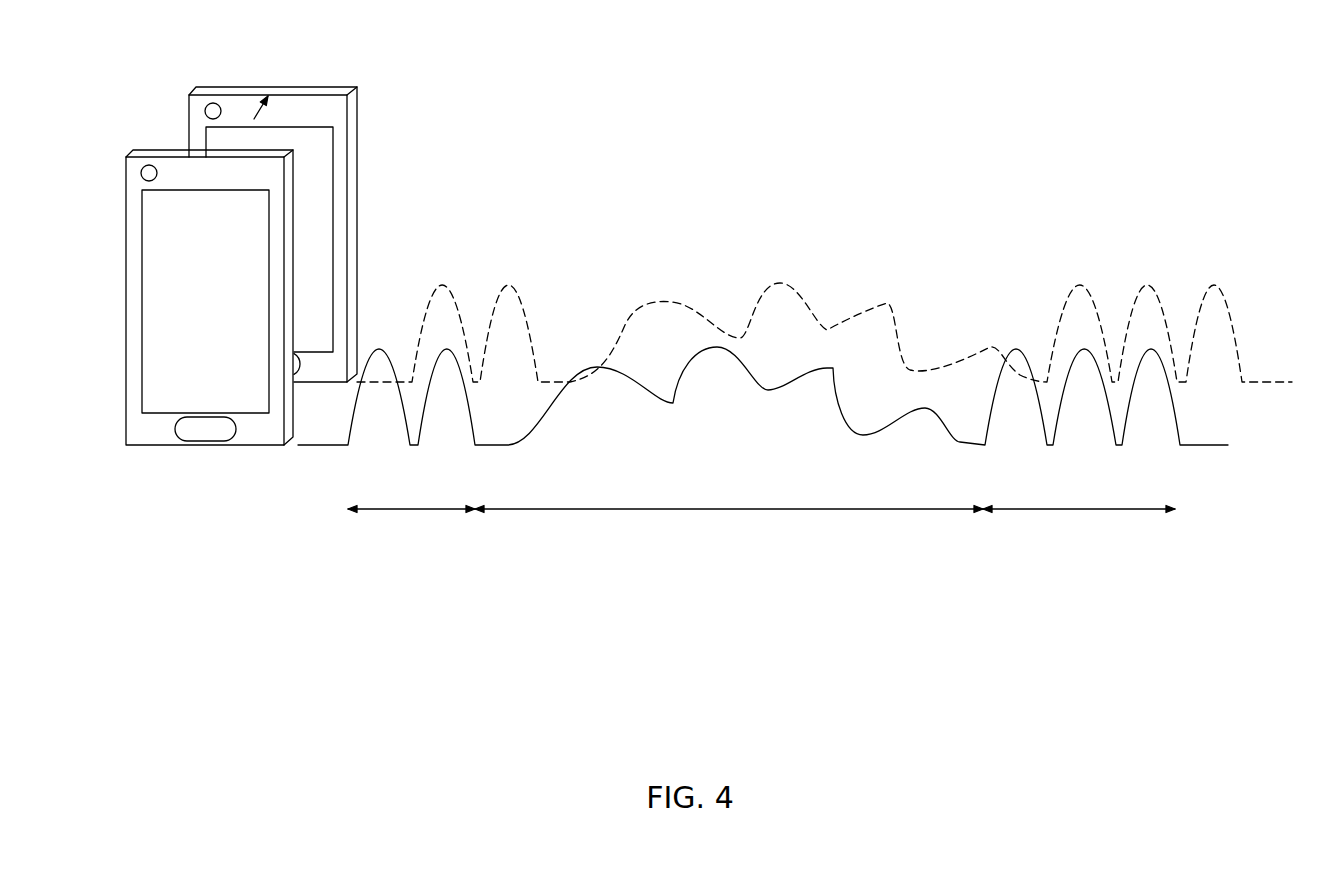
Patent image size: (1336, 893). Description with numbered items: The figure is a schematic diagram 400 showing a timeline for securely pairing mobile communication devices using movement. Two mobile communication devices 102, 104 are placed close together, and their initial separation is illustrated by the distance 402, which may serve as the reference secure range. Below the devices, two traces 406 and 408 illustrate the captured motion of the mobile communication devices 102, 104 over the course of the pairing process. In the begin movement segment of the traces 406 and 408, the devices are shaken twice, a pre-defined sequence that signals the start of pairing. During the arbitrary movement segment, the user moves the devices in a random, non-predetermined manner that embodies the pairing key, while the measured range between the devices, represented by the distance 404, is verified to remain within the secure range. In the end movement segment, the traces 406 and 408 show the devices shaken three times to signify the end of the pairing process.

The mobile communication device 102 is at (126, 175).
The mobile communication device 104 is at (190, 109).
The schematic diagram 400 is at (1062, 120).
The distance 402 is at (207, 158).
The distance 404 is at (770, 388).
The trace 406 is at (1176, 416).
The trace 408 is at (1230, 318).